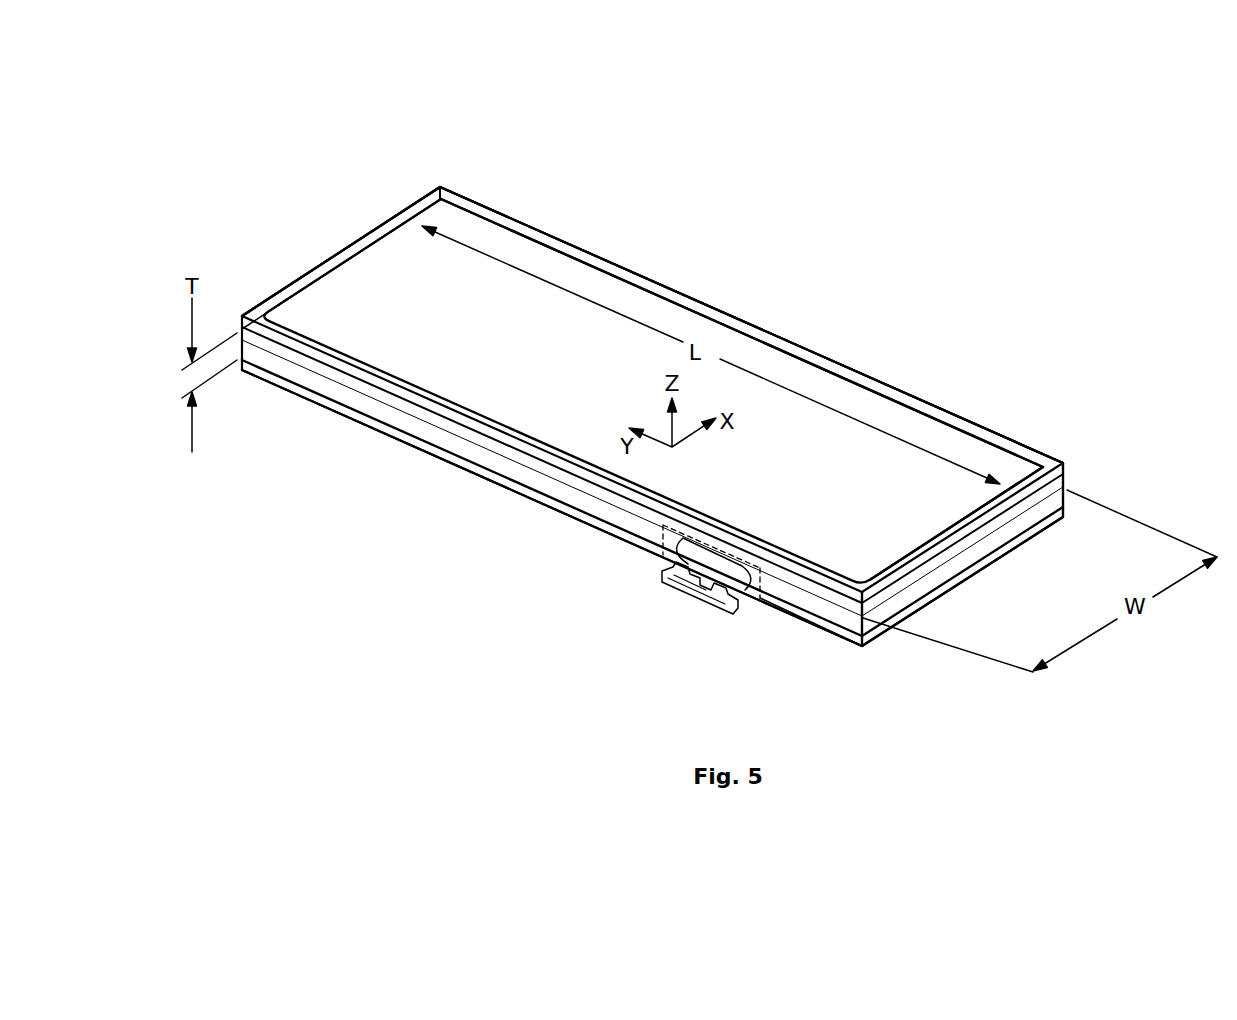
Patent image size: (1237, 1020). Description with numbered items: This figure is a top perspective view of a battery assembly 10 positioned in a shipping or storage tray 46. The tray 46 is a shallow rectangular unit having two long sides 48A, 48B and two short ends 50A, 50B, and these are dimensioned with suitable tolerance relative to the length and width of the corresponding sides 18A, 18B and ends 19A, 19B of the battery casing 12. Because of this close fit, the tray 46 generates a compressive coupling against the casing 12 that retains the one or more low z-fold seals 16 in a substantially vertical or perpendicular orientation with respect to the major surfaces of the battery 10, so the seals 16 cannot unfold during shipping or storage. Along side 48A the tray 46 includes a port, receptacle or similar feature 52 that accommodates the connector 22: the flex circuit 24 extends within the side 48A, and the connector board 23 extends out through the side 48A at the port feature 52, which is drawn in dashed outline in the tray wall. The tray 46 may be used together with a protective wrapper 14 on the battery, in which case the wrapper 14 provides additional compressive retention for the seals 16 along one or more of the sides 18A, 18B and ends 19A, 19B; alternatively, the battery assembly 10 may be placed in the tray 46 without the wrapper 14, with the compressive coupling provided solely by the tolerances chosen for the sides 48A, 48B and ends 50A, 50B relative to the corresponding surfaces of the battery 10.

The battery assembly 10 is at (978, 198).
The battery casing 12 is at (1010, 507).
The protective wrapper 14 is at (320, 297).
The low z-fold seals 16 is at (1080, 501).
The side 18A is at (359, 411).
The side 18B is at (589, 246).
The end 19A is at (968, 579).
The end 19B is at (363, 229).
The connector 22 is at (627, 611).
The connector board 23 is at (660, 576).
The flex circuit 24 is at (787, 598).
The shipping or storage tray 46 is at (434, 172).
The side 48A is at (432, 458).
The side 48B is at (493, 208).
The end 50A is at (1012, 553).
The end 50B is at (388, 218).
The port feature 52 is at (672, 540).